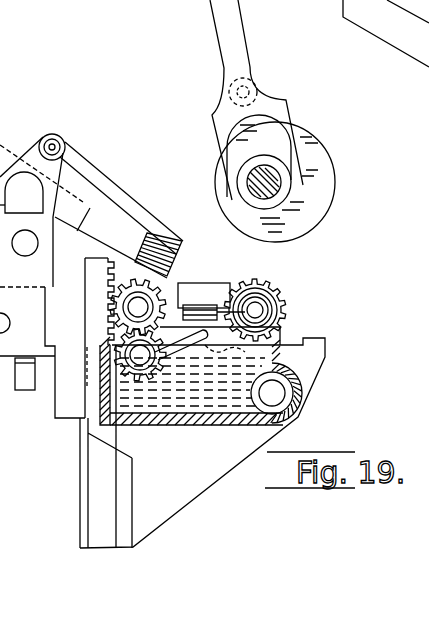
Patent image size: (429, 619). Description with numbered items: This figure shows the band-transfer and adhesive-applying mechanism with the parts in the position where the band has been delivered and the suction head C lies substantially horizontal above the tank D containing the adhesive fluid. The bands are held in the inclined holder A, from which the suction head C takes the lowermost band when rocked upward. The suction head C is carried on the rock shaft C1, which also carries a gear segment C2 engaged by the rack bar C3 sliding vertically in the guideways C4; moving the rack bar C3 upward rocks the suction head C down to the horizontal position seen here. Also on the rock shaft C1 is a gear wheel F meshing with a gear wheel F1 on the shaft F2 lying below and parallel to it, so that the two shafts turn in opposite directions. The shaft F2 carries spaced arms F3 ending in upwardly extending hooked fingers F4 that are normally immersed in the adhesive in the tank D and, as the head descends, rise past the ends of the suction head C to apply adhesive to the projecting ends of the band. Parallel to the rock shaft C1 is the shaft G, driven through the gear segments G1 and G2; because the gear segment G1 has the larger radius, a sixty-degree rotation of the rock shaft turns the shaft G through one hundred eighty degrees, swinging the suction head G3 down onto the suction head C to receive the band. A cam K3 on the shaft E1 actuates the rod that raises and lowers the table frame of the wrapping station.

The holder A is at (80, 203).
The gear segment C2 is at (128, 278).
The rack bar C3 is at (100, 297).
The rock shaft C1 is at (107, 313).
The guideways C4 is at (70, 398).
The suction head C is at (283, 340).
The tank D is at (212, 412).
The shaft E1 is at (280, 193).
The gear wheel F is at (157, 287).
The gear wheel F1 is at (196, 348).
The shaft F2 is at (143, 372).
The arms F3 is at (203, 350).
The hooked fingers F4 is at (215, 306).
The shaft G is at (277, 296).
The gear segment G1 is at (231, 355).
The gear segment G2 is at (265, 283).
The suction head G3 is at (200, 297).
The cam K3 is at (325, 165).